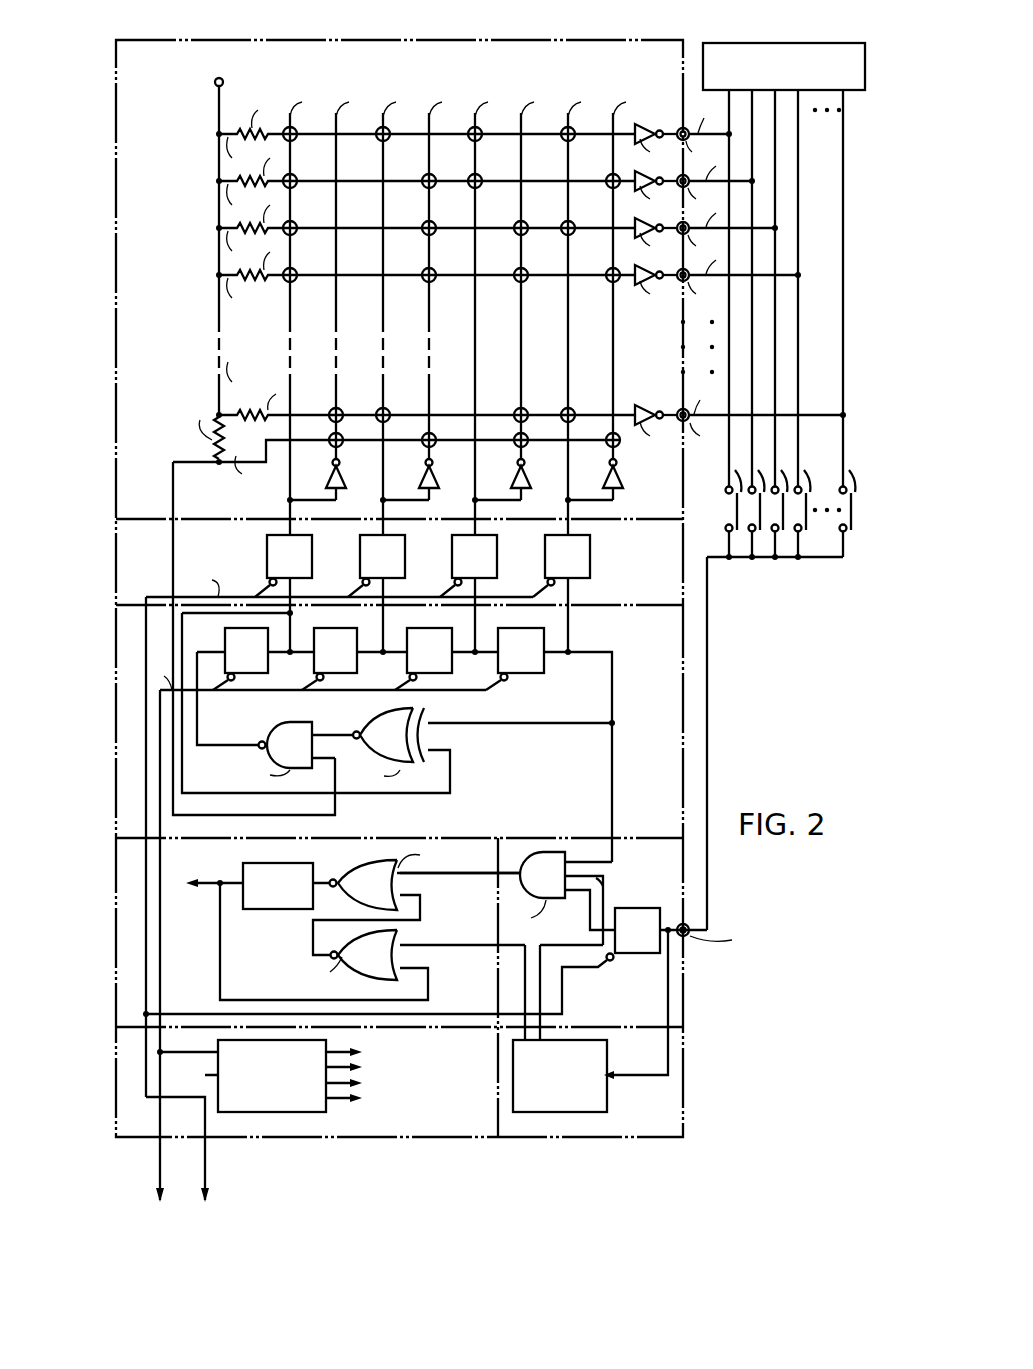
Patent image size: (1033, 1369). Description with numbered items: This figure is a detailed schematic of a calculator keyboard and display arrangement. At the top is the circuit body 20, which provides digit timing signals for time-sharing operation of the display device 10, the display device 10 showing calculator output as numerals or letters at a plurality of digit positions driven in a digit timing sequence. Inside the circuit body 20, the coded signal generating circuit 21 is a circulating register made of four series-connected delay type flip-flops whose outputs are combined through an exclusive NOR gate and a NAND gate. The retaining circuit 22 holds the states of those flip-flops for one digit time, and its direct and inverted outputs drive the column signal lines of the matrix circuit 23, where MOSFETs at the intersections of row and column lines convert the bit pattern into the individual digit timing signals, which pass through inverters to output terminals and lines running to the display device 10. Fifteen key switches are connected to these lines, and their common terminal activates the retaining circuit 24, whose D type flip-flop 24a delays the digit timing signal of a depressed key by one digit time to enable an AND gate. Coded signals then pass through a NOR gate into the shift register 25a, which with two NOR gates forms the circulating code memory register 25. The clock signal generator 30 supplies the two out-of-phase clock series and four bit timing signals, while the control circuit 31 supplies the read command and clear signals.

The display device 10 is at (785, 43).
The circuit body 20 is at (578, 44).
The matrix circuit 23 is at (365, 44).
The retaining circuit 22 is at (668, 584).
The coded signal generating circuit 21 is at (672, 722).
The code memory register 25 is at (126, 997).
The shift register 25a is at (272, 910).
The retaining circuit 24 is at (676, 1005).
The D type flip-flop 24a is at (636, 956).
The clock signal generator 30 is at (262, 1112).
The control circuit 31 is at (604, 1106).